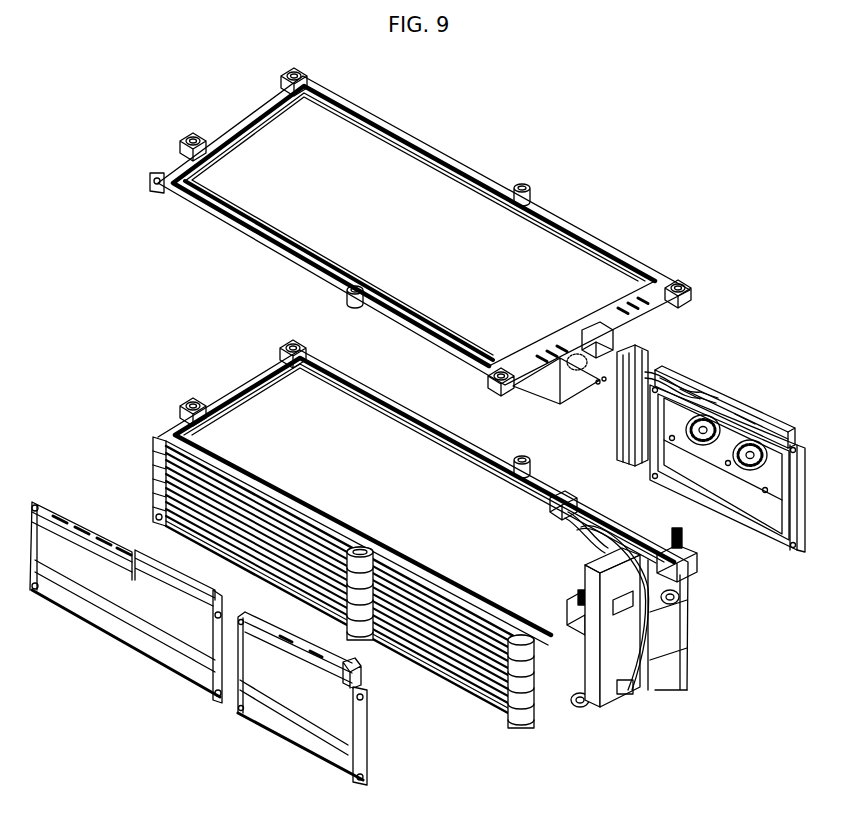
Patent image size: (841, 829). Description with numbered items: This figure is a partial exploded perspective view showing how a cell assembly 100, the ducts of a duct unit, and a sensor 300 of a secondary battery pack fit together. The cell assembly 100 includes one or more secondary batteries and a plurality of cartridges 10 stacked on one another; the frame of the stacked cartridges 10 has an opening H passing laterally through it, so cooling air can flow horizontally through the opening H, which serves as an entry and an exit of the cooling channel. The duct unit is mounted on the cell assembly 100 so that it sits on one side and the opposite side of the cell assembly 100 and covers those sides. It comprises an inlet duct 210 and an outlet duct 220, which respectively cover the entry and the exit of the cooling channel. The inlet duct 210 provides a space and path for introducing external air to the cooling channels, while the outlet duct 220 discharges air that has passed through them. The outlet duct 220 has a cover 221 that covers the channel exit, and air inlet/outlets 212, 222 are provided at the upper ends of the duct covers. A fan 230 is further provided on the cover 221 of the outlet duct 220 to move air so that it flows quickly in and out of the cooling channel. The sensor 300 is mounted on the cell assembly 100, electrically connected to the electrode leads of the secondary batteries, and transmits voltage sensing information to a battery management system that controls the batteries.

The cartridge 10 is at (427, 115).
The opening H is at (241, 231).
The cell assembly 100 is at (175, 394).
The inlet duct 210 is at (163, 643).
The air inlet/outlet 212 is at (353, 667).
The outlet duct 220 is at (716, 386).
The cover 221 is at (742, 493).
The air inlet/outlet 222 is at (743, 407).
The fan 230 is at (755, 450).
The sensor 300 is at (622, 647).